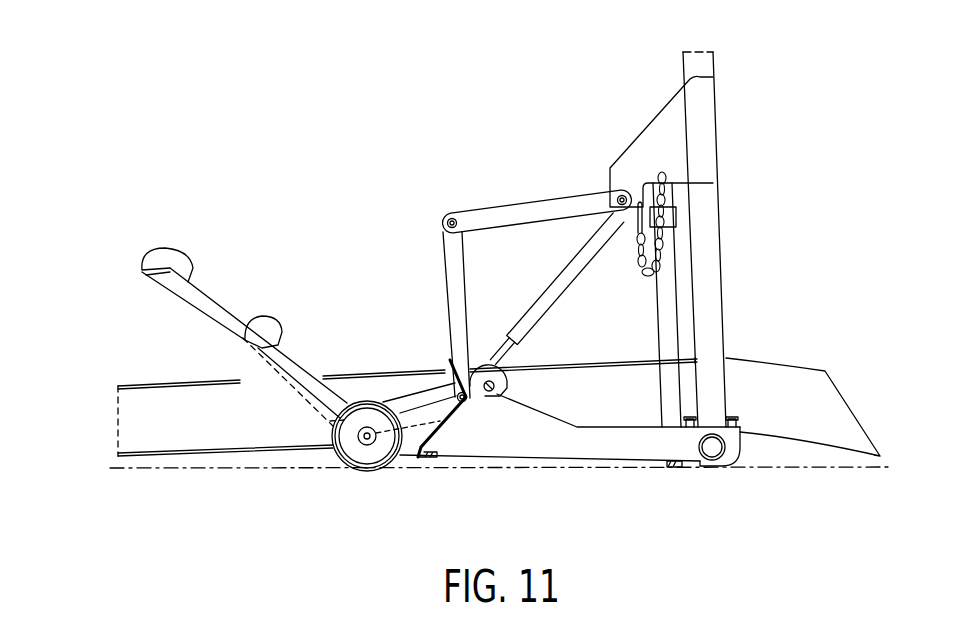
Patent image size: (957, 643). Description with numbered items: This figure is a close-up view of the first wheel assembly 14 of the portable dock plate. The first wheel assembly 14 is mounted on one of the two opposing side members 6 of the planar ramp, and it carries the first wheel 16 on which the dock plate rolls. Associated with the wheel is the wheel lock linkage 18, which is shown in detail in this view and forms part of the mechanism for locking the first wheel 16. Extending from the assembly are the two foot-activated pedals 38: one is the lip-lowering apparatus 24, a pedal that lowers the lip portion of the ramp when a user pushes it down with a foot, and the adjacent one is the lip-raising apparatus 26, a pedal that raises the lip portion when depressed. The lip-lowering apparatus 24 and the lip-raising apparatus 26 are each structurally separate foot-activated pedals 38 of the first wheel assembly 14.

The side member 6 is at (143, 427).
The first wheel assembly 14 is at (625, 440).
The first wheel 16 is at (345, 463).
The wheel lock linkage 18 is at (517, 215).
The lip-lowering apparatus 24 is at (260, 327).
The lip-raising apparatus 26 is at (158, 257).
The foot-activated pedal 38 is at (181, 336).